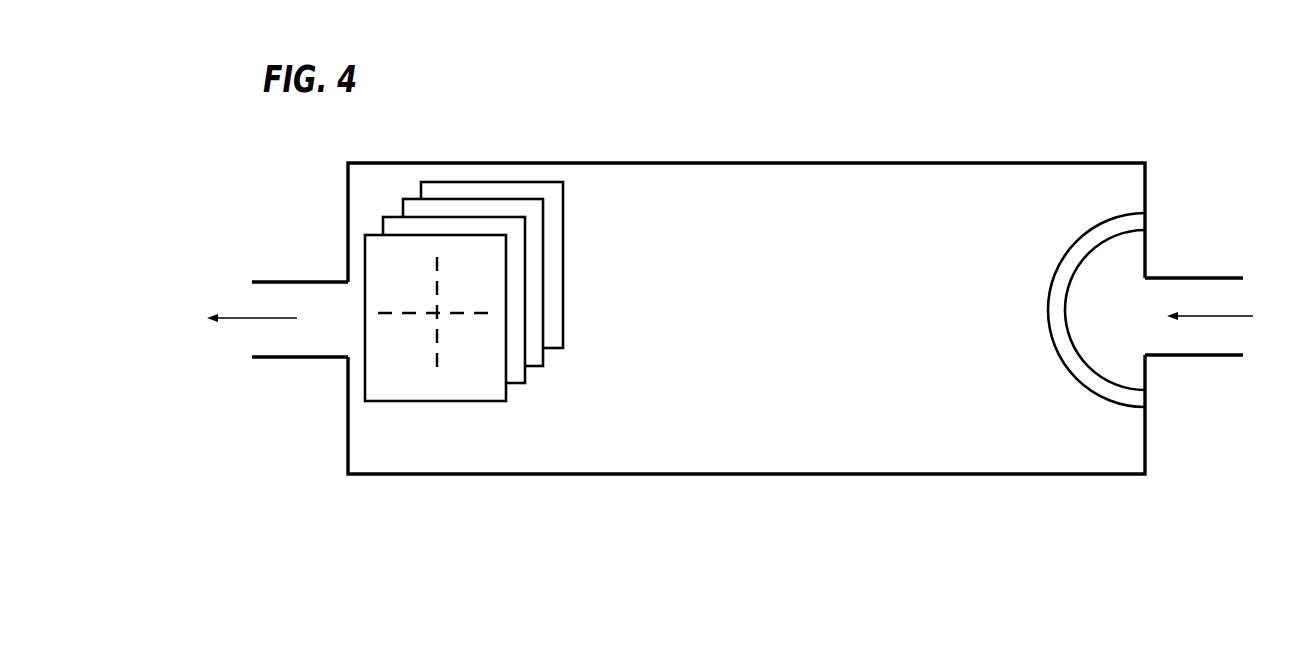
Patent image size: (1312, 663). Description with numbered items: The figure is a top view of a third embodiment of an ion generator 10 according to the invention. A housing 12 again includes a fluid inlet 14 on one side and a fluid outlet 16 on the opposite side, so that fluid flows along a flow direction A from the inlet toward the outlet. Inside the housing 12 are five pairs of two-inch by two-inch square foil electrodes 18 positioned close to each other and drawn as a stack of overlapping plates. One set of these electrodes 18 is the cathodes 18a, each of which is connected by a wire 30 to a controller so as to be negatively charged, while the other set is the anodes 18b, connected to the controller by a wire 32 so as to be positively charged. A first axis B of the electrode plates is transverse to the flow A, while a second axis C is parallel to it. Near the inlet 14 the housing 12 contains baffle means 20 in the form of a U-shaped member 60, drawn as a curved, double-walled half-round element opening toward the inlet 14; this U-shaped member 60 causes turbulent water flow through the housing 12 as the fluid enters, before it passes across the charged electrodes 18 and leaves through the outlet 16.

The ion generator 10 is at (733, 132).
The housing 12 is at (797, 476).
The fluid inlet 14 is at (1170, 278).
The fluid outlet 16 is at (317, 358).
The electrodes 18 is at (459, 308).
The cathodes 18a is at (436, 290).
The anodes 18b is at (377, 341).
The baffle means 20 is at (984, 335).
The wire 30 is at (391, 276).
The wire 32 is at (377, 318).
The U-shaped member 60 is at (1063, 350).